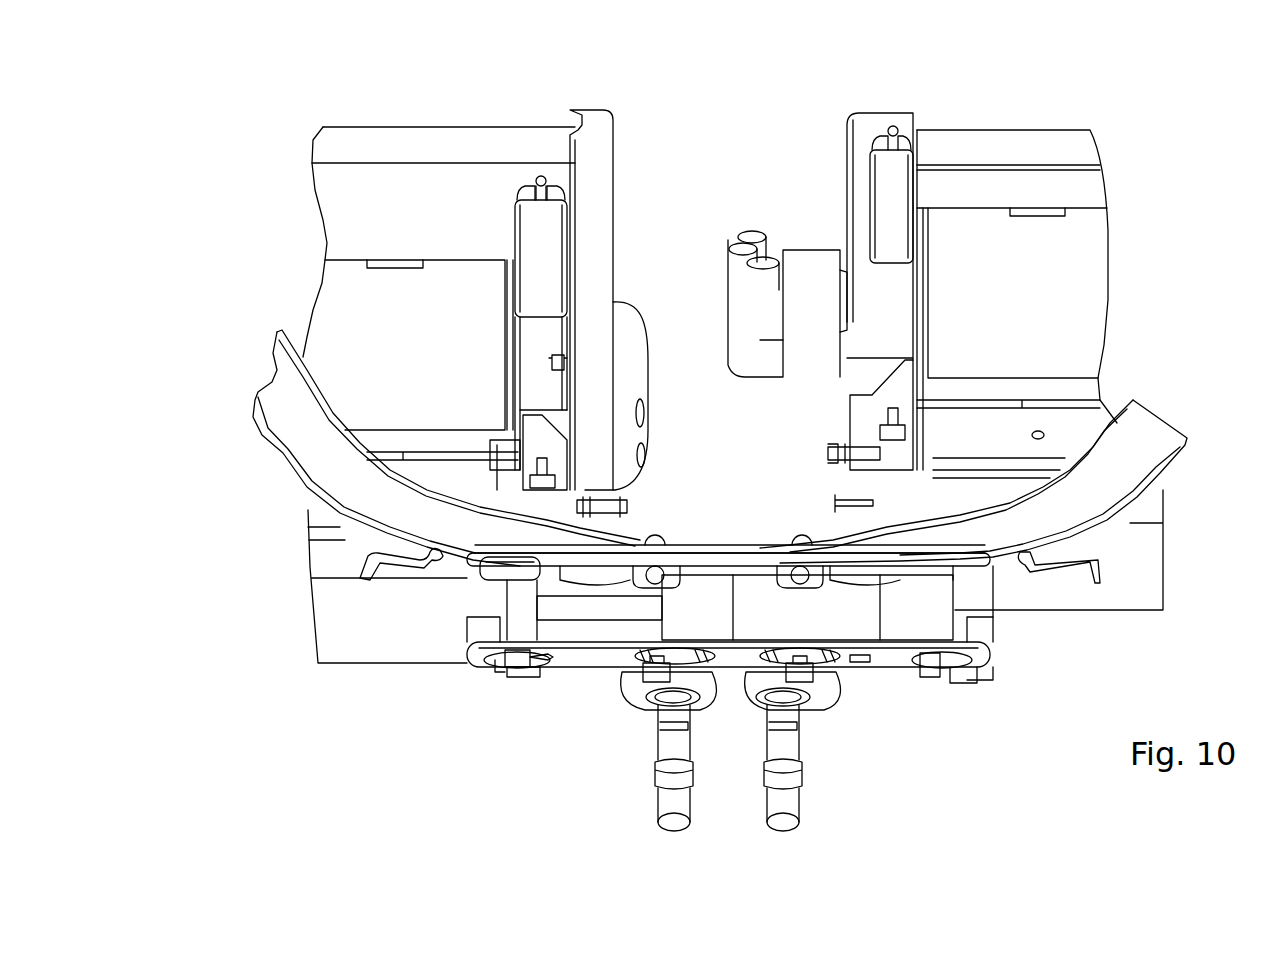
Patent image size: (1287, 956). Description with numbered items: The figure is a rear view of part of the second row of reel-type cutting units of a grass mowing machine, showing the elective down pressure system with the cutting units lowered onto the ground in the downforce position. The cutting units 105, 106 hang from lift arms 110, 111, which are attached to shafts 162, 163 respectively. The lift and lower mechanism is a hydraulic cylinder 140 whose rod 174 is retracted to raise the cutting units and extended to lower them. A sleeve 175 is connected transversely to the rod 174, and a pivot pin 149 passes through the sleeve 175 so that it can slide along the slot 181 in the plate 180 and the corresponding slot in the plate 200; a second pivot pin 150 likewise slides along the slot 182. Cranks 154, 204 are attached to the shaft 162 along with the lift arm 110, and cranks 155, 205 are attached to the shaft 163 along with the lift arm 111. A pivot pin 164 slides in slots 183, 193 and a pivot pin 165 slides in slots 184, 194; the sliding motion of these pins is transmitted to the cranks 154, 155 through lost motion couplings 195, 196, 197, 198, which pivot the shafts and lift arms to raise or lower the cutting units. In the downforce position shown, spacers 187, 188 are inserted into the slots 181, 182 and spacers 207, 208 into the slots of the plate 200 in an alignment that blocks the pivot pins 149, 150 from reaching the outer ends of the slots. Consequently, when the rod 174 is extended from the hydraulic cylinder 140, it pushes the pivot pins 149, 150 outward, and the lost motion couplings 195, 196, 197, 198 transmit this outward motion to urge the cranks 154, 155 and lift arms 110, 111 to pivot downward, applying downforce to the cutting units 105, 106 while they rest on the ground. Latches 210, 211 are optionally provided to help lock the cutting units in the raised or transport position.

The reel-type cutting unit 105 is at (643, 183).
The reel-type cutting unit 106 is at (806, 183).
The lift arm 110 is at (275, 445).
The lift arm 111 is at (1175, 457).
The hydraulic cylinder 140 is at (790, 616).
The pivot pin 149 is at (522, 678).
The pivot pin 150 is at (930, 675).
The crank 154 is at (630, 700).
The crank 155 is at (828, 700).
The shaft 162 is at (665, 808).
The shaft 163 is at (795, 810).
The pivot pin 164 is at (657, 740).
The pivot pin 165 is at (810, 745).
The rod 174 is at (577, 617).
The sleeve 175 is at (513, 595).
The plate 180 is at (600, 660).
The slot 181 is at (482, 665).
The slot 182 is at (978, 680).
The slot 183 is at (670, 652).
The slot 184 is at (850, 665).
The spacer 187 is at (490, 623).
The spacer 188 is at (1000, 650).
The slot 193 is at (710, 550).
The slot 194 is at (753, 557).
The lost motion coupling 195 is at (507, 630).
The lost motion coupling 196 is at (890, 638).
The lost motion coupling 197 is at (580, 563).
The lost motion coupling 198 is at (873, 560).
The plate 200 is at (728, 552).
The crank 204 is at (683, 548).
The crank 205 is at (780, 550).
The spacer 207 is at (485, 580).
The spacer 208 is at (977, 605).
The latch 210 is at (310, 558).
The latch 211 is at (1000, 563).